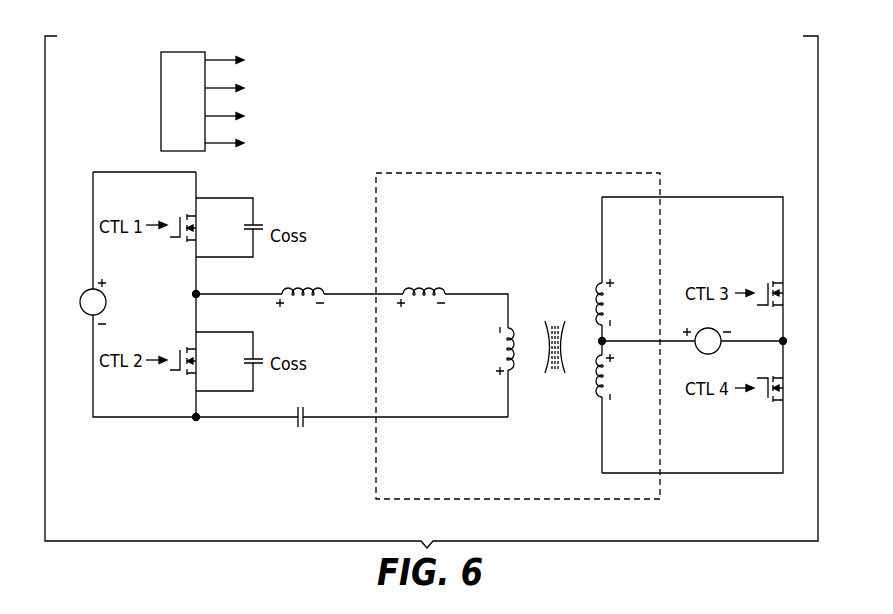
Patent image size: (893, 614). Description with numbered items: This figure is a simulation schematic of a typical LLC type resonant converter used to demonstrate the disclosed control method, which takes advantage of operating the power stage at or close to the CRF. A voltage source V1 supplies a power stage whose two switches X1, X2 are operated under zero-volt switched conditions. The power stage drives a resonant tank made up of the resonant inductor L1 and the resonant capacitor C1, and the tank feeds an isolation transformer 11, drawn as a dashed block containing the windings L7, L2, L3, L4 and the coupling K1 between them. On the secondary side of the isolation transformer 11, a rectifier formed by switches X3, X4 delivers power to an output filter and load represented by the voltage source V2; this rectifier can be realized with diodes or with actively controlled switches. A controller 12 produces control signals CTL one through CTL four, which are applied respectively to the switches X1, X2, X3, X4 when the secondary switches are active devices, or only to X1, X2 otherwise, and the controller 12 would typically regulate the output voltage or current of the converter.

The isolation transformer 11 is at (518, 310).
The controller 12 is at (161, 103).
The voltage source V1 is at (81, 301).
The voltage source V2 is at (707, 352).
The switch X1 is at (196, 228).
The switch X2 is at (196, 361).
The switch X3 is at (783, 294).
The switch X4 is at (783, 389).
The resonant inductor L1 is at (300, 285).
The seventh inductor L7 is at (421, 285).
The magnetizing inductor L2 is at (493, 351).
The third inductor L3 is at (615, 302).
The fourth inductor L4 is at (615, 377).
The resonant capacitor C1 is at (300, 428).
The transformer coupling K1 is at (555, 336).